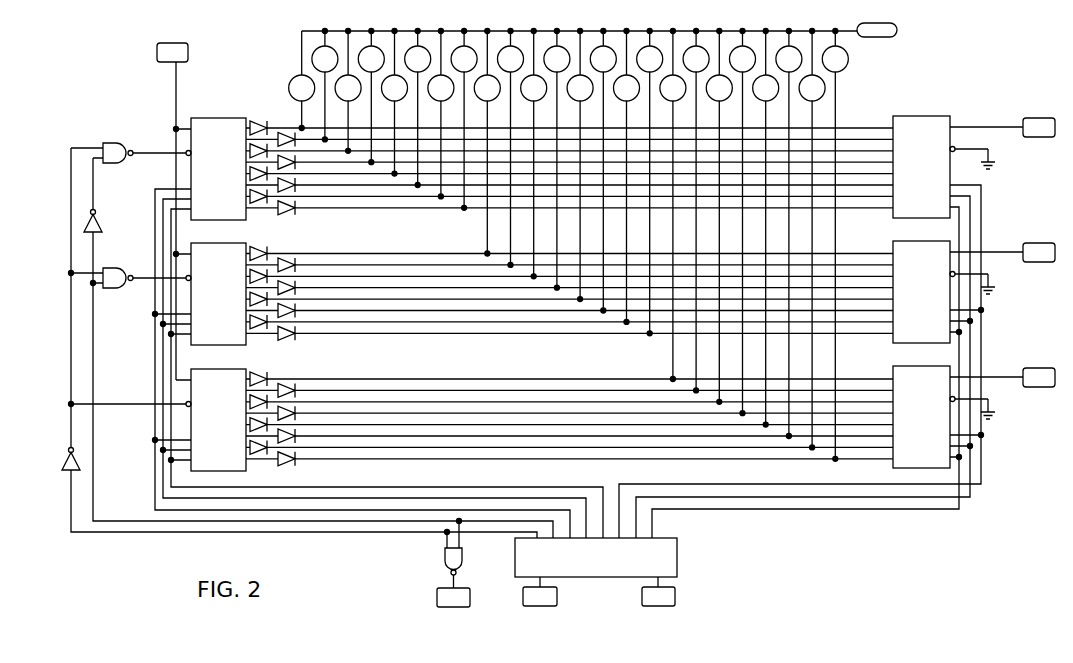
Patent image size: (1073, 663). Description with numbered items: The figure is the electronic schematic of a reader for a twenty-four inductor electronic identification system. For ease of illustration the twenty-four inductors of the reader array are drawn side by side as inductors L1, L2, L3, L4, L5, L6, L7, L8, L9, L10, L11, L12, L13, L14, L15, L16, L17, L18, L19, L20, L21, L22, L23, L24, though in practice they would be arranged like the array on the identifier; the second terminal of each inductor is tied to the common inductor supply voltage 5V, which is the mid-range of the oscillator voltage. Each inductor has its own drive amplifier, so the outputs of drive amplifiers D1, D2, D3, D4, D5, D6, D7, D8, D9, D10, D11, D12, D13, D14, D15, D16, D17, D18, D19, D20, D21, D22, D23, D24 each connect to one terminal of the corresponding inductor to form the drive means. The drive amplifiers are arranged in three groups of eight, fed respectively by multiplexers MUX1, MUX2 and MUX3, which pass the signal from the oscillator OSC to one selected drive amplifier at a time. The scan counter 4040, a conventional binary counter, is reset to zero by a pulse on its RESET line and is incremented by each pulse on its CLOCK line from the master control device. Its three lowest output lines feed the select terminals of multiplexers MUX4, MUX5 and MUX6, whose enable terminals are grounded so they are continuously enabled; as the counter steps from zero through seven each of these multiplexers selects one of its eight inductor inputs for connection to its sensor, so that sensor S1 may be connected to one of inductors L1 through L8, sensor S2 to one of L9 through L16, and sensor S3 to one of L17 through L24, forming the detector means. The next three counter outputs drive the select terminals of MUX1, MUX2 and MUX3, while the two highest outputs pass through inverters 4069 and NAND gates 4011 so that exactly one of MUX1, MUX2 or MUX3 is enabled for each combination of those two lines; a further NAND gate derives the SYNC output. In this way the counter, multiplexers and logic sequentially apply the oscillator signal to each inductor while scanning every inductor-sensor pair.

The inductor supply voltage 5V is at (599, 30).
The inductor L1 is at (302, 81).
The inductor L2 is at (325, 85).
The inductor L3 is at (348, 91).
The inductor L4 is at (371, 97).
The inductor L5 is at (395, 103).
The inductor L6 is at (418, 108).
The inductor L7 is at (441, 114).
The inductor L8 is at (464, 120).
The inductor L9 is at (487, 143).
The inductor L10 is at (511, 148).
The inductor L11 is at (534, 154).
The inductor L12 is at (557, 160).
The inductor L13 is at (580, 165).
The inductor L14 is at (603, 171).
The inductor L15 is at (627, 177).
The inductor L16 is at (650, 182).
The inductor L17 is at (673, 205).
The inductor L18 is at (696, 211).
The inductor L19 is at (719, 217).
The inductor L20 is at (743, 222).
The inductor L21 is at (766, 228).
The inductor L22 is at (789, 234).
The inductor L23 is at (812, 239).
The inductor L24 is at (835, 245).
The drive amplifier D1 is at (569, 119).
The drive amplifier D2 is at (569, 128).
The drive amplifier D3 is at (569, 151).
The drive amplifier D4 is at (569, 162).
The drive amplifier D5 is at (569, 174).
The drive amplifier D6 is at (569, 185).
The drive amplifier D7 is at (569, 196).
The drive amplifier D8 is at (569, 208).
The drive amplifier D9 is at (569, 245).
The drive amplifier D10 is at (569, 254).
The drive amplifier D11 is at (569, 276).
The drive amplifier D12 is at (569, 288).
The drive amplifier D13 is at (569, 299).
The drive amplifier D14 is at (569, 311).
The drive amplifier D15 is at (569, 322).
The drive amplifier D16 is at (569, 333).
The drive amplifier D17 is at (569, 370).
The drive amplifier D18 is at (569, 382).
The drive amplifier D19 is at (569, 402).
The drive amplifier D20 is at (569, 413).
The drive amplifier D21 is at (569, 425).
The drive amplifier D22 is at (569, 436).
The drive amplifier D23 is at (569, 447).
The drive amplifier D24 is at (569, 459).
The multiplexer MUX1 is at (216, 160).
The multiplexer MUX2 is at (216, 285).
The multiplexer MUX3 is at (216, 411).
The multiplexer MUX4 is at (944, 158).
The multiplexer MUX5 is at (944, 283).
The multiplexer MUX6 is at (944, 408).
The sensor S1 is at (1002, 127).
The sensor S2 is at (1002, 252).
The sensor S3 is at (1002, 377).
The oscillator OSC is at (174, 211).
The NAND gates 4011 is at (266, 359).
The inverters 4069 is at (291, 343).
The scan counter 4040 is at (596, 557).
The sync line SYNC is at (453, 608).
The scan counter CLOCK line CLOCK is at (542, 602).
The scan counter RESET line RESET is at (659, 602).